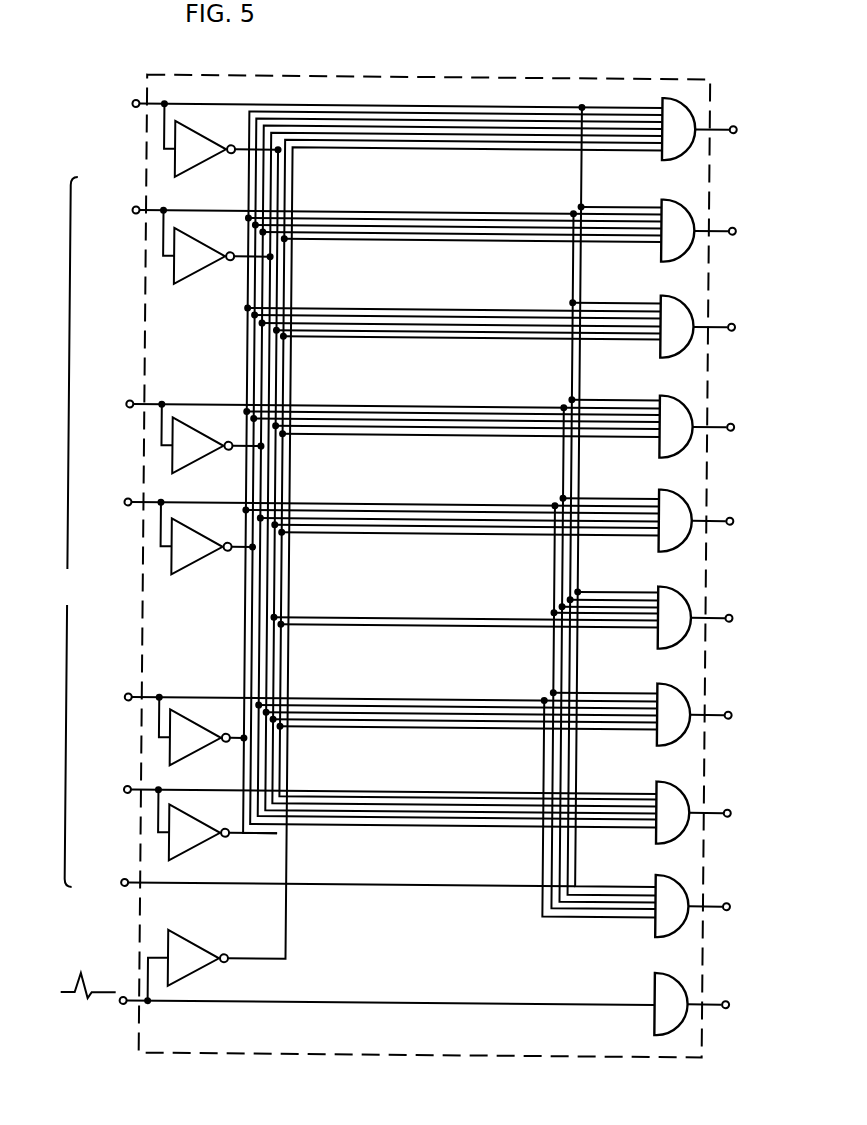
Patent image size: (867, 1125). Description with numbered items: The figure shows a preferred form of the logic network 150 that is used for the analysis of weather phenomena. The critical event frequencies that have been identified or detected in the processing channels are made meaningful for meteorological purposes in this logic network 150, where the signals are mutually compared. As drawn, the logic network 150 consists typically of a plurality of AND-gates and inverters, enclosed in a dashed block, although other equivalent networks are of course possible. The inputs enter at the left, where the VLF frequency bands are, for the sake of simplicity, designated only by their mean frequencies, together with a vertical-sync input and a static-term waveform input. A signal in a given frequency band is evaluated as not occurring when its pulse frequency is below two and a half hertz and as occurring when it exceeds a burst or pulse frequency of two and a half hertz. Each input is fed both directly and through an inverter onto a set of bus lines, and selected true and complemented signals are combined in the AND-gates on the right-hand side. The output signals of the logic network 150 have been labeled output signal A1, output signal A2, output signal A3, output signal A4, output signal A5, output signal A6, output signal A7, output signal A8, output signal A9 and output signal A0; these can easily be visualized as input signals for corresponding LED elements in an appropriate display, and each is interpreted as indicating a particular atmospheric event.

The logic network 150 is at (407, 591).
The output signal A1 is at (718, 129).
The output signal A2 is at (717, 231).
The output signal A3 is at (716, 327).
The output signal A4 is at (715, 427).
The output signal A5 is at (715, 521).
The output signal A6 is at (714, 618).
The output signal A7 is at (713, 715).
The output signal A8 is at (712, 813).
The output signal A9 is at (711, 906).
The output signal A0 is at (710, 1004).